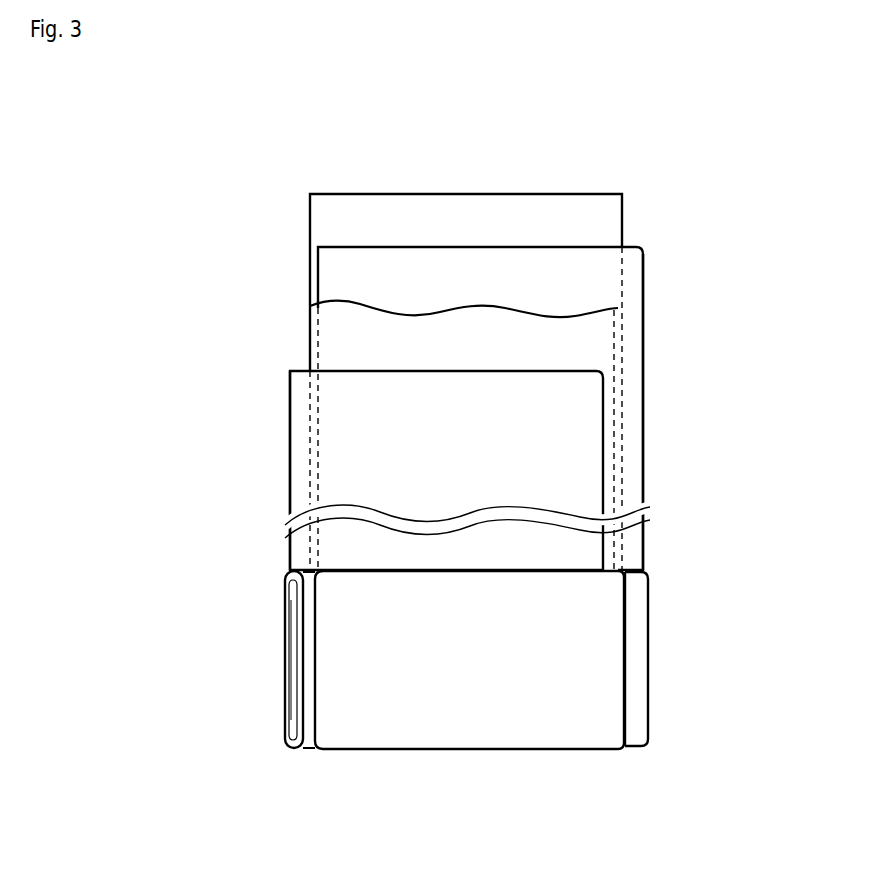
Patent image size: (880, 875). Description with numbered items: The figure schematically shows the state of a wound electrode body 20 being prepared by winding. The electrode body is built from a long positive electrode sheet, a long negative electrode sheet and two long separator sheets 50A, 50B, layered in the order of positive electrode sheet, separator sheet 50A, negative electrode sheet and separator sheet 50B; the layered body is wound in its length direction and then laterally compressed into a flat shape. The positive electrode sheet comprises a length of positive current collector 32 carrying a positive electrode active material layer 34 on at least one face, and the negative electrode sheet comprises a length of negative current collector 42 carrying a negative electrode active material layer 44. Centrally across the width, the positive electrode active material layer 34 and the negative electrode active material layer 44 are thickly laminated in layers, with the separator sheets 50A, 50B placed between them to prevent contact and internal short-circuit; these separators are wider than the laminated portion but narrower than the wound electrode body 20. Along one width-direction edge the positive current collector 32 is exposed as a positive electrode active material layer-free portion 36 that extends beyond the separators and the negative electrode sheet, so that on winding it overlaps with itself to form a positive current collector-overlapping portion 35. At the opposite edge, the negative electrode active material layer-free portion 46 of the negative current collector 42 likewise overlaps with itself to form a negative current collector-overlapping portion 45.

The wound electrode body 20 is at (380, 727).
The positive current collector 32 is at (380, 470).
The positive electrode active material layer 34 is at (345, 486).
The positive current collector-overlapping portion 35 is at (292, 630).
The positive electrode active material layer-free portion 36 is at (287, 393).
The negative current collector 42 is at (539, 405).
The negative electrode active material layer 44 is at (610, 270).
The negative current collector-overlapping portion 45 is at (636, 637).
The negative electrode active material layer-free portion 46 is at (625, 371).
The separator sheet 50A is at (340, 333).
The separator sheet 50B is at (330, 213).